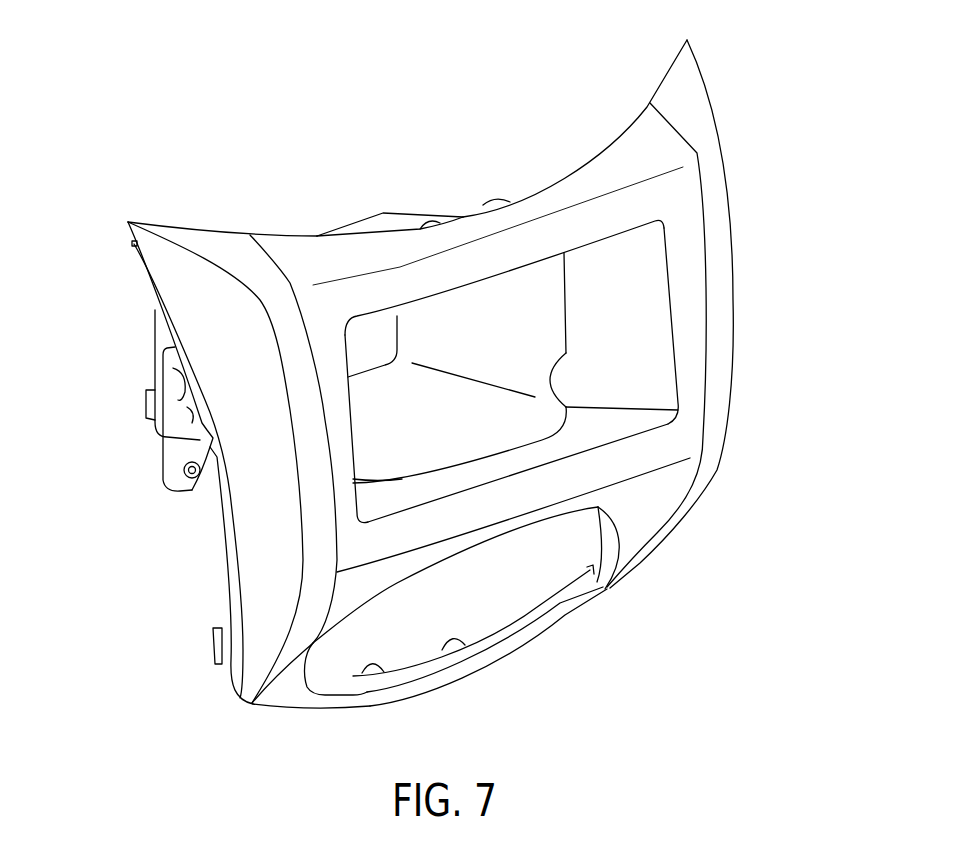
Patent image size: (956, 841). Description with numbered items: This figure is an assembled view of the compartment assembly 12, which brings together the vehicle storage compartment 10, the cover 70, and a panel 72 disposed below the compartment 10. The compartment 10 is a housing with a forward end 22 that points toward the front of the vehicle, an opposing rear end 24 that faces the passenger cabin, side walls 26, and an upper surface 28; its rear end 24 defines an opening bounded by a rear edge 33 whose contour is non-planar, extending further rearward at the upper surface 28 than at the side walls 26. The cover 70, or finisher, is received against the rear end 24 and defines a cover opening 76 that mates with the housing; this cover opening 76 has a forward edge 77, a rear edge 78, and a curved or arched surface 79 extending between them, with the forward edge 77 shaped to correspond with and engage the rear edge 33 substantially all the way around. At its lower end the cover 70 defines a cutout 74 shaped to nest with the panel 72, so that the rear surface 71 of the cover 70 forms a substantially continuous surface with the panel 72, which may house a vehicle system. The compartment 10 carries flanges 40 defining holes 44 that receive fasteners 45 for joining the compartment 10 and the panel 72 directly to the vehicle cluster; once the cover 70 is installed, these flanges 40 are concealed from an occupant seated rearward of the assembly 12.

The compartment assembly 12 is at (537, 47).
The forward end 22 is at (370, 343).
The side walls 26 is at (533, 303).
The upper surface 28 is at (430, 390).
The surface 79 is at (633, 283).
The rear edge 78 is at (678, 353).
The forward edge 77 is at (562, 413).
The cover opening 76 is at (566, 447).
The rear end 24 is at (370, 457).
The vehicle storage compartment 10 is at (407, 452).
The rear edge 33 is at (548, 501).
The cutout 74 is at (313, 642).
The panel 72 is at (287, 702).
The flanges 40 is at (190, 437).
The fastener 45 is at (186, 464).
The holes 44 is at (192, 485).
The cover 70 is at (683, 187).
The rear surface 71 is at (327, 263).